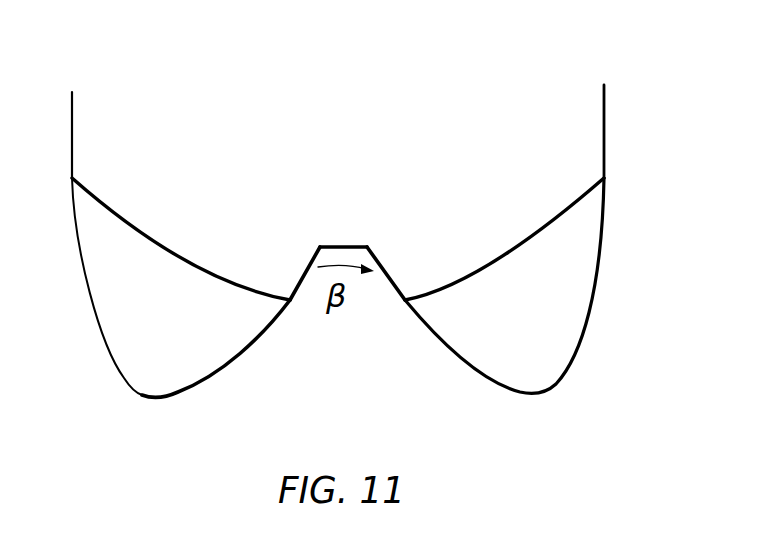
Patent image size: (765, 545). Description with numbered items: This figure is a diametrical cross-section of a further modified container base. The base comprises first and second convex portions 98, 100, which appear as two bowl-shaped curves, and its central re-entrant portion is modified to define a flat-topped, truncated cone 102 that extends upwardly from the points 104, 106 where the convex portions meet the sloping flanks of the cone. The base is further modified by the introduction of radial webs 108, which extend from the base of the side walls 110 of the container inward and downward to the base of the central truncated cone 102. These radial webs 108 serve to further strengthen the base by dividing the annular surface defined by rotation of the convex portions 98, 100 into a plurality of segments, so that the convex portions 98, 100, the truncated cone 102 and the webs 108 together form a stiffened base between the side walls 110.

The first convex portion 98 is at (141, 399).
The second convex portion 100 is at (568, 384).
The flat-topped truncated cone 102 is at (355, 240).
The point 104 is at (289, 304).
The point 106 is at (406, 305).
The radial web 108 is at (195, 261).
The side wall 110 is at (72, 130).